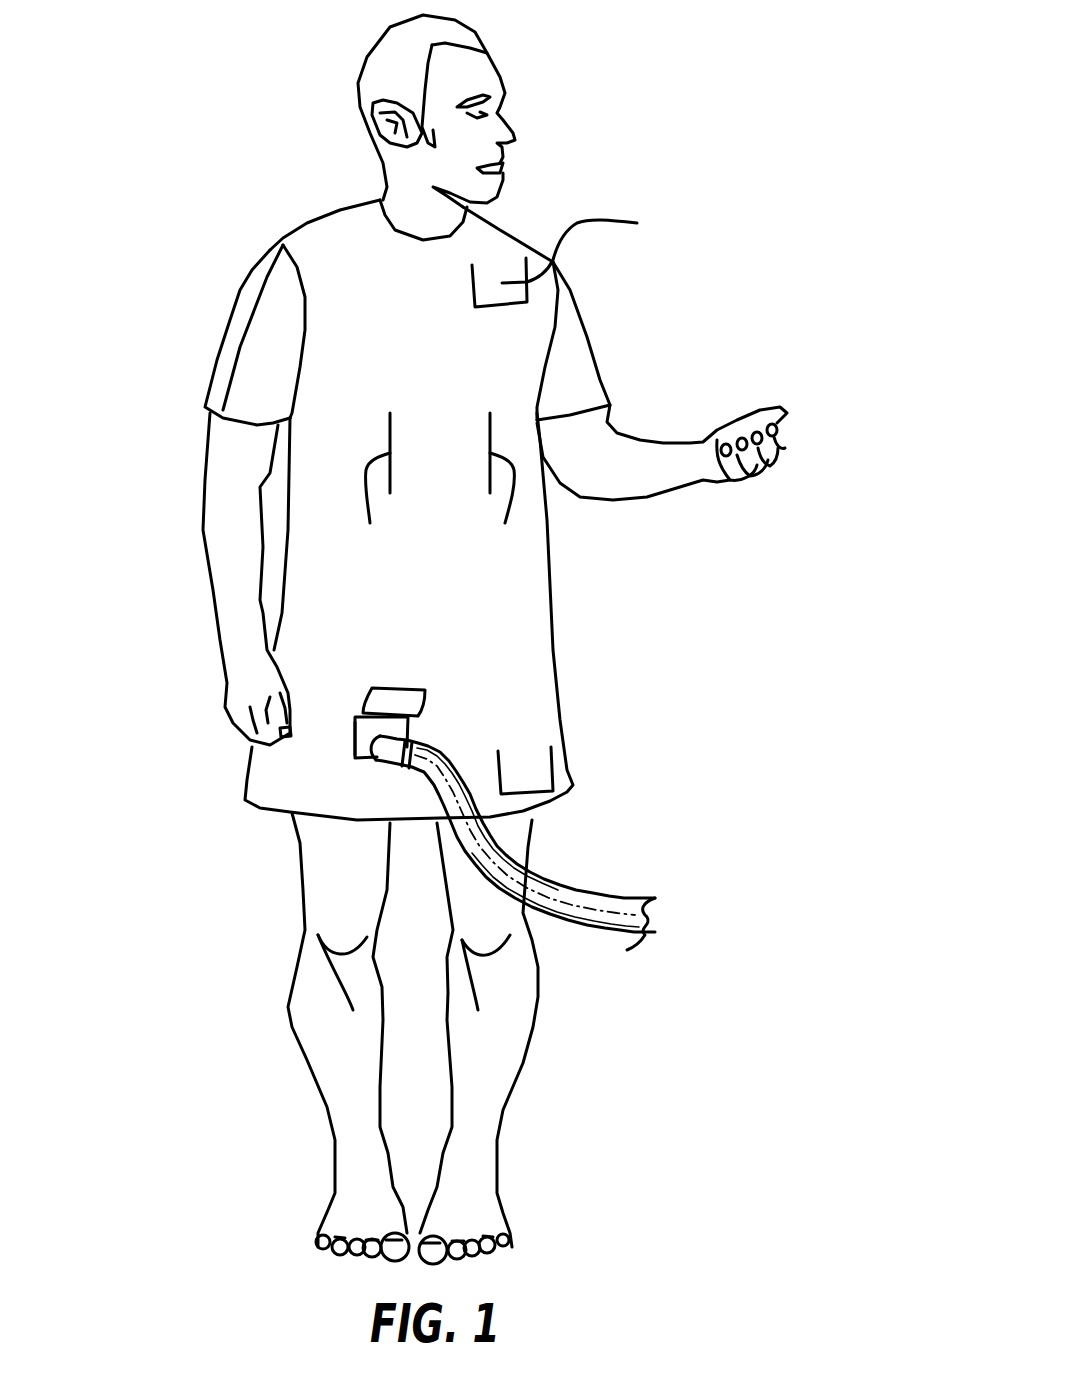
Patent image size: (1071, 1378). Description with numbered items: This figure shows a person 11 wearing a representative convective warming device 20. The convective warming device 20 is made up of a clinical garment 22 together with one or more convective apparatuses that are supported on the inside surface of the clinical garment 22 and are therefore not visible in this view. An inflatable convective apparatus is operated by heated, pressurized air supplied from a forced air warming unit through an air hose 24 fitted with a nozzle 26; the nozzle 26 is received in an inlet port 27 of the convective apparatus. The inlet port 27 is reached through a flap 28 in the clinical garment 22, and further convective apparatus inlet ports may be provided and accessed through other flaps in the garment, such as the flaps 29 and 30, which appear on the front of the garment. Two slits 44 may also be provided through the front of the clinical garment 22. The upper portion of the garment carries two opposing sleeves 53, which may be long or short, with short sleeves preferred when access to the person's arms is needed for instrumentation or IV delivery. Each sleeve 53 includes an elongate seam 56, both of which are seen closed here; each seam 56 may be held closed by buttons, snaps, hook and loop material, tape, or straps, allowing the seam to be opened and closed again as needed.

The person 11 is at (573, 48).
The convective warming device 20 is at (470, 575).
The clinical garment 22 is at (550, 543).
The air hose 24 is at (553, 890).
The nozzle 26 is at (410, 740).
The inlet port 27 is at (355, 738).
The flap 28 is at (398, 688).
The flap 29 is at (586, 262).
The flap 30 is at (540, 770).
The slits 44 is at (433, 490).
The sleeves 53 is at (245, 280).
The seam 56 is at (230, 372).